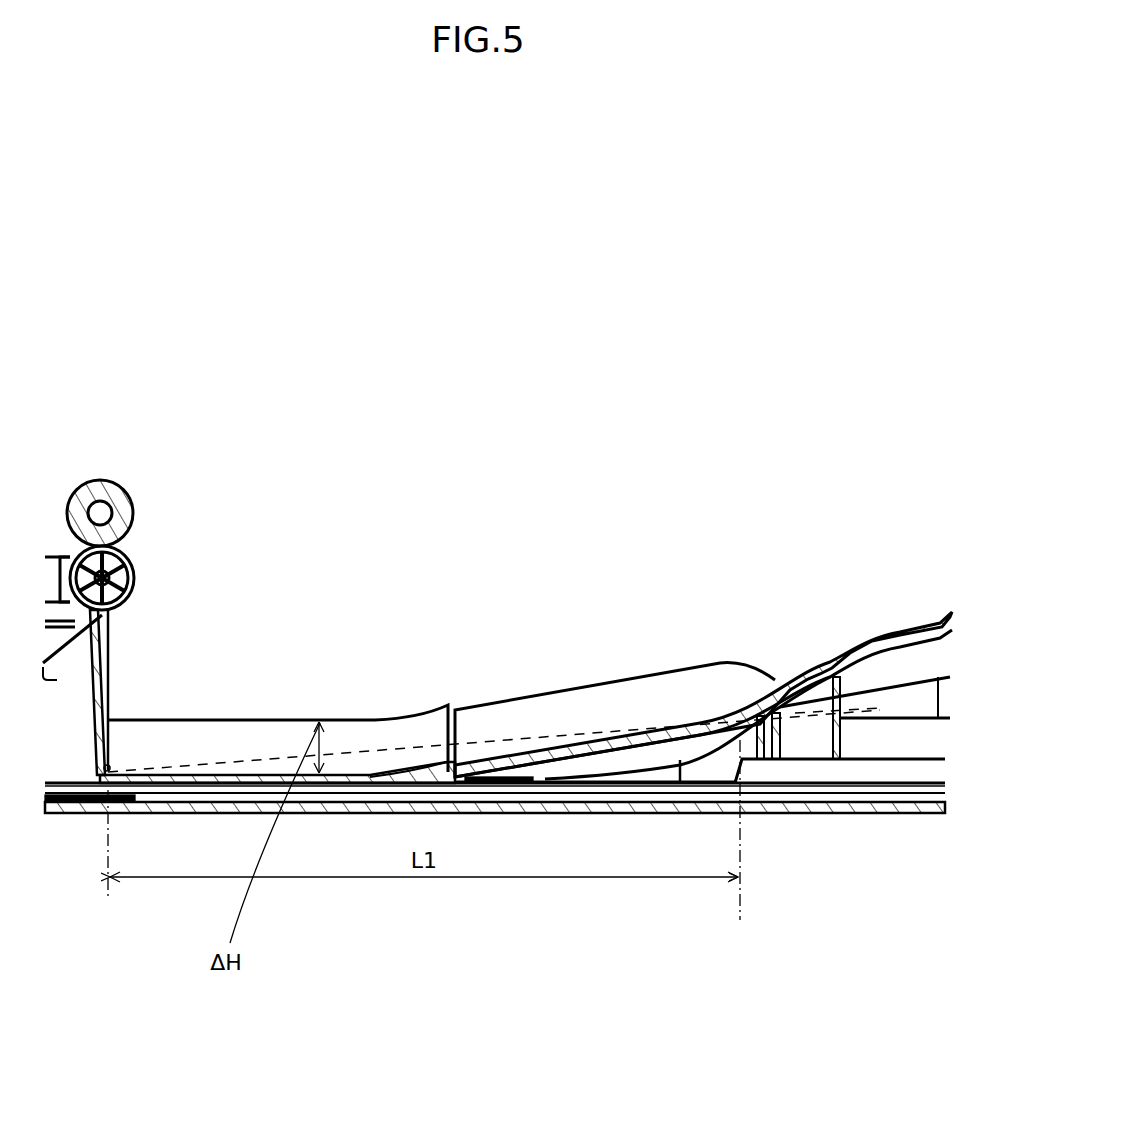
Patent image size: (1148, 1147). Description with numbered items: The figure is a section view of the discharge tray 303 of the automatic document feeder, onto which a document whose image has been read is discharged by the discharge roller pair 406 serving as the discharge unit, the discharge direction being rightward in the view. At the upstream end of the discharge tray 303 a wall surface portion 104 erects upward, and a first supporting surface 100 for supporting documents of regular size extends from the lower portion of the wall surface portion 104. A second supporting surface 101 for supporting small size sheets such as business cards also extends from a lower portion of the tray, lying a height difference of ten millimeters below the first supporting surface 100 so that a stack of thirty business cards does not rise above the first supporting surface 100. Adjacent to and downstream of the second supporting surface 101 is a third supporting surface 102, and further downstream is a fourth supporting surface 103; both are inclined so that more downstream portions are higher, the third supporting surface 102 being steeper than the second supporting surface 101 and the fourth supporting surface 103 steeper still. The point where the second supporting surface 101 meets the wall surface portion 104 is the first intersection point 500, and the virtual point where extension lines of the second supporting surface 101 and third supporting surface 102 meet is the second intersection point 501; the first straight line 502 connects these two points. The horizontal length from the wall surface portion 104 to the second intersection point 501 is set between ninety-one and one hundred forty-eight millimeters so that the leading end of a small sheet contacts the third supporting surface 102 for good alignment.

The first supporting surface 100 is at (290, 718).
The second supporting surface 101 is at (372, 770).
The third supporting surface 102 is at (808, 660).
The fourth supporting surface 103 is at (912, 628).
The wall surface portion 104 is at (110, 668).
The discharge tray 303 is at (575, 668).
The discharge roller pair 406 is at (105, 480).
The first intersection point 500 is at (105, 778).
The second intersection point 501 is at (740, 737).
The first straight line 502 is at (490, 740).